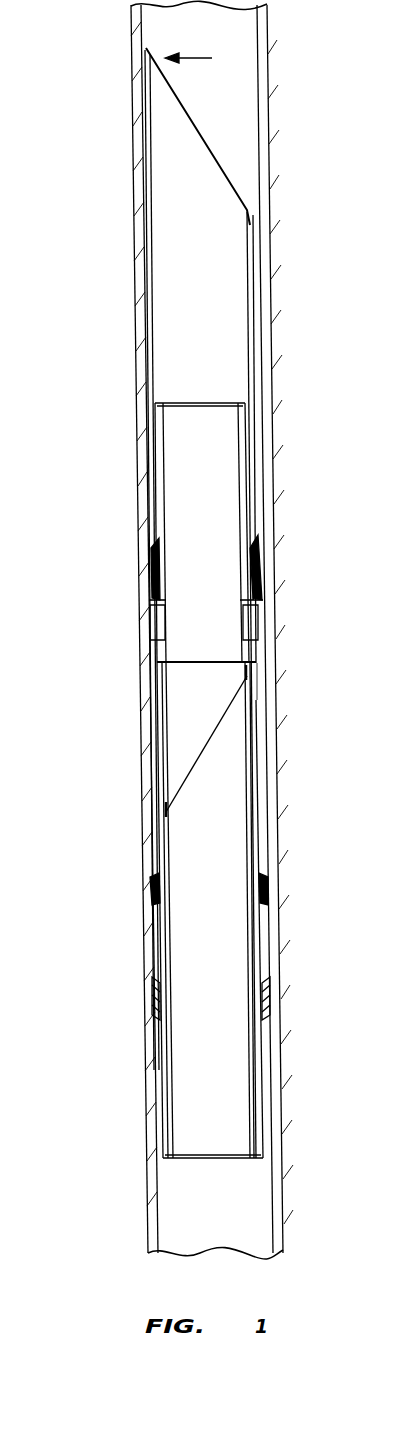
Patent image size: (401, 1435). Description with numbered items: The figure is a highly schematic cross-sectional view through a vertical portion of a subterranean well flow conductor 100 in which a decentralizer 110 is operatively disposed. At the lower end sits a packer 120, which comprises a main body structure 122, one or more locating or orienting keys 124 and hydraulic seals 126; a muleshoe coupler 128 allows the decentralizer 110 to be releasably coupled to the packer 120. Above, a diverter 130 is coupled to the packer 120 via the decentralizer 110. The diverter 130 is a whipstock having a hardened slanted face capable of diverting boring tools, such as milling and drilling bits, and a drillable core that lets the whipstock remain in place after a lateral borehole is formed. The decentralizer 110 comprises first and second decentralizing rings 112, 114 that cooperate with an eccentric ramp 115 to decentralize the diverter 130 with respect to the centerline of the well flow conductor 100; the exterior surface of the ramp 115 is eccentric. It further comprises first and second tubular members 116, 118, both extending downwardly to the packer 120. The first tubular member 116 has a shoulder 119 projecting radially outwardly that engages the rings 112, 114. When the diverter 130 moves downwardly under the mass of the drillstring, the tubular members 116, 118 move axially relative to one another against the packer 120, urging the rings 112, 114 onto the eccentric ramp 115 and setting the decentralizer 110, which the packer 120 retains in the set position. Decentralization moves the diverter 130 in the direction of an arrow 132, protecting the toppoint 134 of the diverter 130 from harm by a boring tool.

The well flow conductor 100 is at (270, 193).
The decentralizer 110 is at (122, 526).
The first decentralizing ring 112 is at (258, 575).
The second decentralizing ring 114 is at (262, 597).
The eccentric ramp 115 is at (262, 538).
The first tubular member 116 is at (260, 707).
The second tubular member 118 is at (157, 462).
The shoulder 119 is at (252, 633).
The packer 120 is at (206, 910).
The main body structure 122 is at (165, 846).
The locating or orienting keys 124 is at (268, 996).
The hydraulic seals 126 is at (268, 889).
The muleshoe coupler 128 is at (188, 716).
The diverter 130 is at (161, 587).
The arrow 132 is at (200, 58).
The toppoint 134 is at (143, 62).